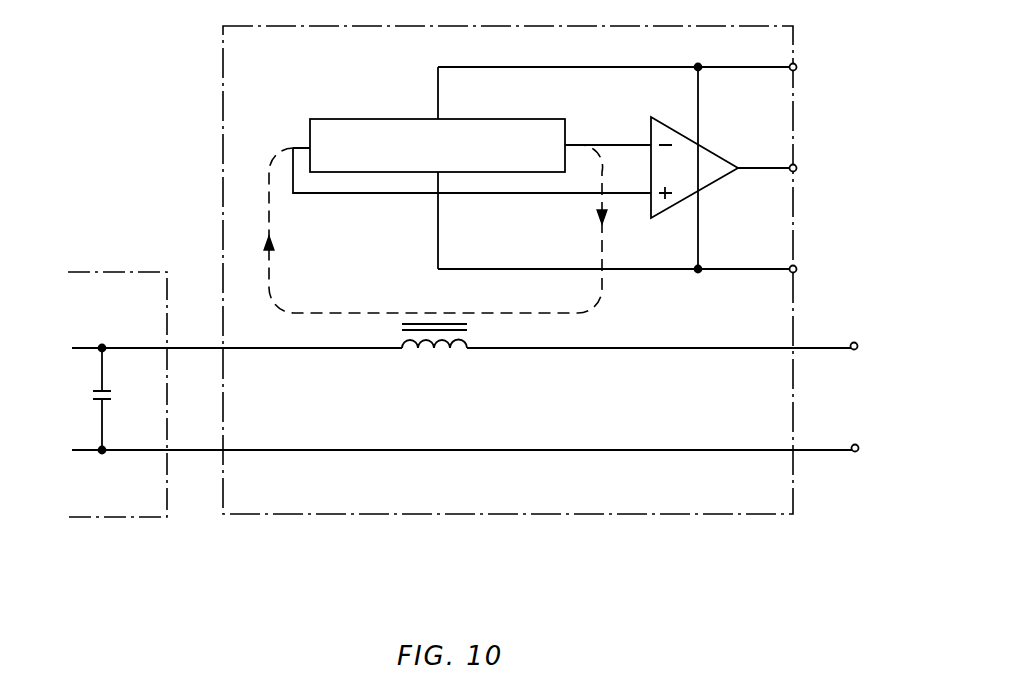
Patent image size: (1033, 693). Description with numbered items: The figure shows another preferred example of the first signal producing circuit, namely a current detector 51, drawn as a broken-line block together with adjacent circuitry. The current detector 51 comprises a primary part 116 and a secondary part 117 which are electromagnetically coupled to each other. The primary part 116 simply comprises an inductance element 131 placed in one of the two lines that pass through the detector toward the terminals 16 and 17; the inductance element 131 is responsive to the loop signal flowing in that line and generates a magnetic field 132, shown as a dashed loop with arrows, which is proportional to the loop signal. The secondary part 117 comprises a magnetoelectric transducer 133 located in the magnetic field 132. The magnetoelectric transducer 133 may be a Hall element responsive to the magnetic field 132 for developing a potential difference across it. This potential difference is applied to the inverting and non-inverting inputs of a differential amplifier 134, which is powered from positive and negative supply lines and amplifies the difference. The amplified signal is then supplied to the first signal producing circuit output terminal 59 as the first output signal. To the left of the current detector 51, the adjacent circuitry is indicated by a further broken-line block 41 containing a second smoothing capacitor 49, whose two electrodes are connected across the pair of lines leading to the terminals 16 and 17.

The secondary part 117 is at (372, 99).
The magnetoelectric transducer 133 is at (490, 120).
The differential amplifier 134 is at (718, 148).
The first signal producing circuit output terminal 59 is at (797, 166).
The magnetic field 132 is at (271, 276).
The inductance element 131 is at (437, 352).
The primary part 116 is at (491, 397).
The line terminal 16 is at (858, 350).
The line terminal 17 is at (859, 452).
The second smoothing capacitor 49 is at (90, 398).
The power supply block 41 is at (92, 518).
The current detector 51 is at (592, 515).